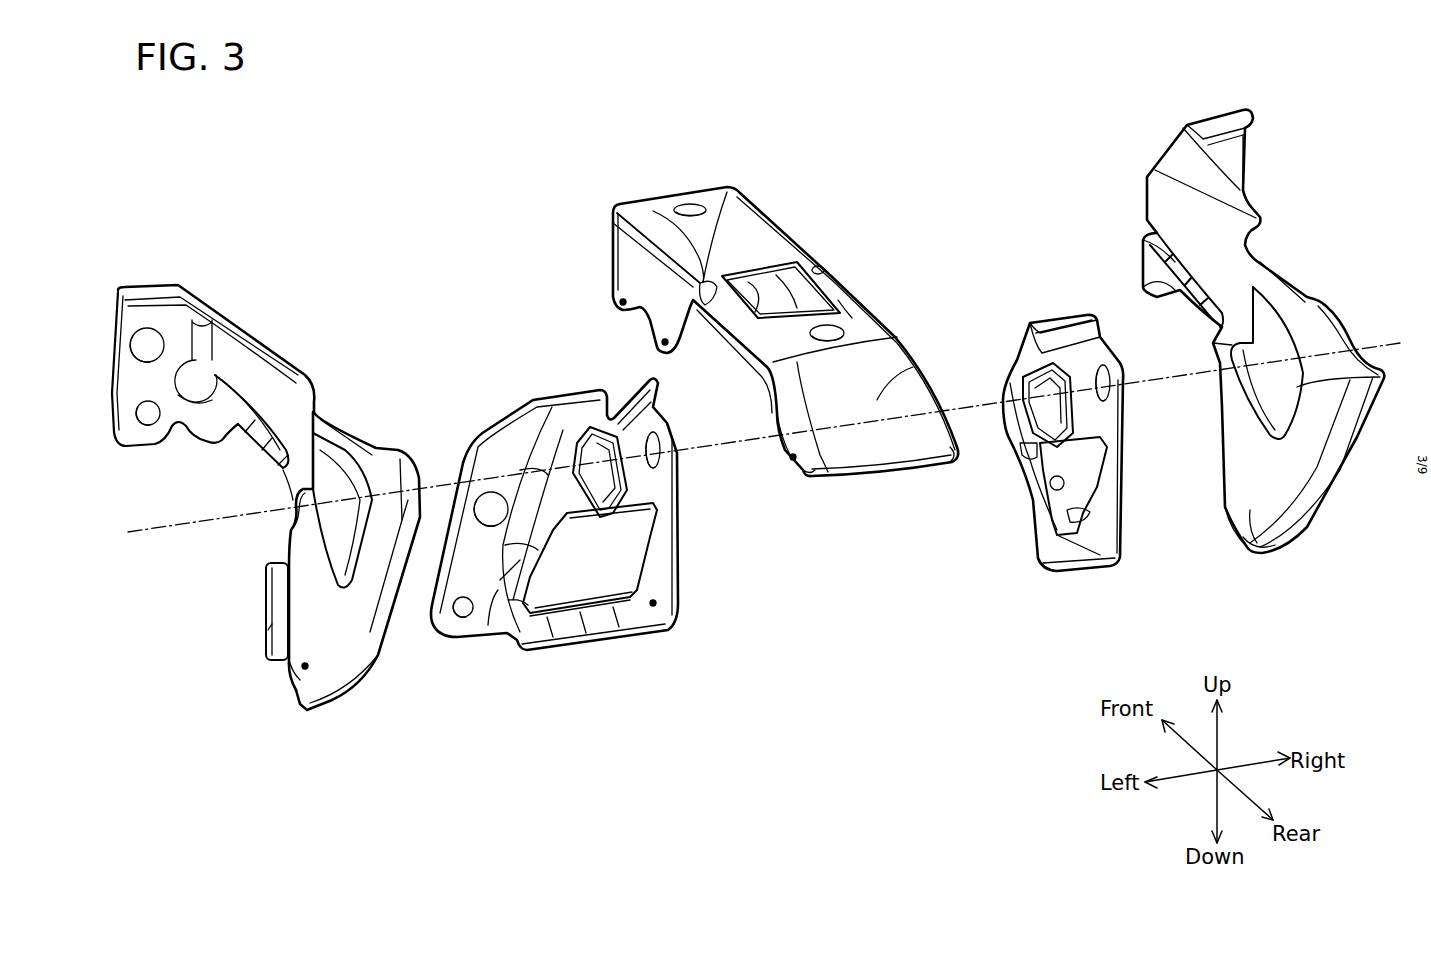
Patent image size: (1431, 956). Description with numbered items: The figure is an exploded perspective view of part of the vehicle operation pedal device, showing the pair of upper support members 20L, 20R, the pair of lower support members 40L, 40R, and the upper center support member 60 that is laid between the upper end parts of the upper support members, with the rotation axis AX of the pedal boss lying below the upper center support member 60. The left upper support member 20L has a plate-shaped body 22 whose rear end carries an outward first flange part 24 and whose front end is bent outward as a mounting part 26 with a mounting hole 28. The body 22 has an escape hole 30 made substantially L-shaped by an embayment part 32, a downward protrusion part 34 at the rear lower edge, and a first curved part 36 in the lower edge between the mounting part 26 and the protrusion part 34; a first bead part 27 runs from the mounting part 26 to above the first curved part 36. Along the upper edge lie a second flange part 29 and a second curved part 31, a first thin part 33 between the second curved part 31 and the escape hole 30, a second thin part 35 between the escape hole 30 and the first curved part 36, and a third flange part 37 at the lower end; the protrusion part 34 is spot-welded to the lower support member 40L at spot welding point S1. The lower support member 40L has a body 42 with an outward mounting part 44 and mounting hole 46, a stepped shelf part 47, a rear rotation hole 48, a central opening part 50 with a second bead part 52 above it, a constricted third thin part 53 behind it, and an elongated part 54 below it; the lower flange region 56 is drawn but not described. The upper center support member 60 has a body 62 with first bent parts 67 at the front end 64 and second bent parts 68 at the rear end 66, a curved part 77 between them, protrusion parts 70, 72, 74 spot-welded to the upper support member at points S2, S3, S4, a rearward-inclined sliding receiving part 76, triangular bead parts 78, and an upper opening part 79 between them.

The upper support member 20L is at (167, 272).
The upper support member 20R is at (1178, 98).
The body 22 is at (333, 660).
The first flange part 24 is at (367, 650).
The mounting part 26 is at (130, 386).
The first bead part 27 is at (188, 405).
The mounting hole 28 is at (118, 332).
The second flange part 29 is at (238, 318).
The escape hole 30 is at (355, 470).
The second curved part 31 is at (338, 415).
The embayment part 32 is at (293, 527).
The first thin part 33 is at (316, 425).
The protrusion part 34 is at (307, 611).
The second thin part 35 is at (293, 502).
The first curved part 36 is at (266, 457).
The third flange part 37 is at (268, 625).
The lower support member 40L is at (565, 680).
The lower support member 40R is at (1105, 572).
The body 42 is at (640, 492).
The mounting part 44 is at (473, 548).
The mounting hole 46 is at (497, 470).
The shelf part 47 is at (633, 388).
The rotation hole 48 is at (655, 470).
The opening part 50 is at (503, 590).
The second bead part 52 is at (593, 470).
The third thin part 53 is at (663, 523).
The elongated part 54 is at (636, 635).
The bottom flange 56 is at (595, 628).
The upper center support member 60 is at (680, 170).
The body 62 is at (748, 223).
The front end 64 is at (668, 197).
The rear end 66 is at (900, 465).
The first bent part 67 is at (608, 243).
The second bent part 68 is at (810, 465).
The protrusion part 70 is at (610, 286).
The protrusion part 72 is at (668, 345).
The protrusion part 74 is at (781, 443).
The sliding receiving part 76 is at (860, 400).
The curved part 77 is at (744, 372).
The triangular bead part 78 is at (618, 208).
The upper opening part 79 is at (740, 250).
The spot welding point S1 is at (297, 685).
The spot welding point S2 is at (612, 300).
The spot welding point S3 is at (658, 348).
The spot welding point S4 is at (787, 462).
The axis AX is at (1380, 340).